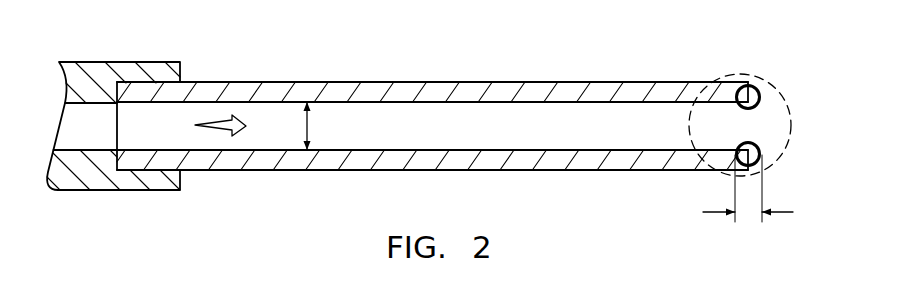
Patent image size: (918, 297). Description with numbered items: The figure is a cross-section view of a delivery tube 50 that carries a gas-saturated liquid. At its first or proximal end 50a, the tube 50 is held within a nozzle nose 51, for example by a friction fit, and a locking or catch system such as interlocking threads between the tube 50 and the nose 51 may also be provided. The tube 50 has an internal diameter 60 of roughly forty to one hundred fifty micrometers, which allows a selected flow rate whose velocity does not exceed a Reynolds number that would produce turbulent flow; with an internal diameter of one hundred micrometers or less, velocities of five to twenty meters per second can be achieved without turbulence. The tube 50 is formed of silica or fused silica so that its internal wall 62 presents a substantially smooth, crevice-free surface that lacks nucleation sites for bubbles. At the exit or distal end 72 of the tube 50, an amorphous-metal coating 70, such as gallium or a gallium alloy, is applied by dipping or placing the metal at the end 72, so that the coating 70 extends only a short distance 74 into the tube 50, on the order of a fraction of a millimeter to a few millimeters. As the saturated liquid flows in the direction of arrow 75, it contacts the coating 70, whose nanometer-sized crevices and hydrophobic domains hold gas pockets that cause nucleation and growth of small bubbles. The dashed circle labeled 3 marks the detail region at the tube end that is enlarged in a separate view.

The detail region shown in FIG. 3 is at (786, 124).
The tube 50 is at (428, 81).
The proximal end 50a is at (117, 128).
The nozzle nose 51 is at (112, 62).
The internal diameter 60 is at (307, 102).
The internal wall 62 is at (457, 150).
The coating 70 is at (768, 144).
The distal end 72 is at (722, 80).
The distance 74 is at (748, 190).
The arrow 75 is at (228, 117).